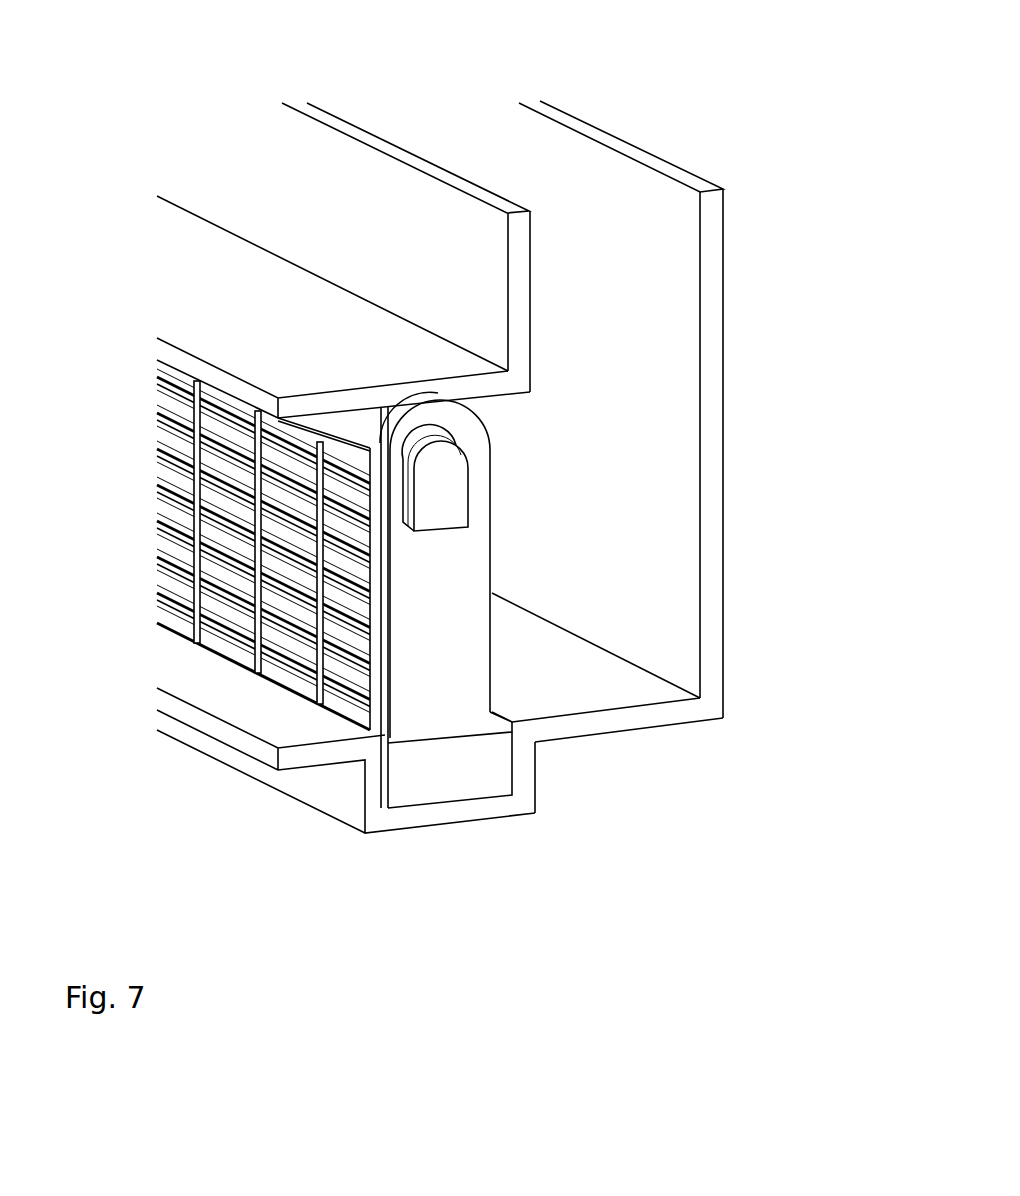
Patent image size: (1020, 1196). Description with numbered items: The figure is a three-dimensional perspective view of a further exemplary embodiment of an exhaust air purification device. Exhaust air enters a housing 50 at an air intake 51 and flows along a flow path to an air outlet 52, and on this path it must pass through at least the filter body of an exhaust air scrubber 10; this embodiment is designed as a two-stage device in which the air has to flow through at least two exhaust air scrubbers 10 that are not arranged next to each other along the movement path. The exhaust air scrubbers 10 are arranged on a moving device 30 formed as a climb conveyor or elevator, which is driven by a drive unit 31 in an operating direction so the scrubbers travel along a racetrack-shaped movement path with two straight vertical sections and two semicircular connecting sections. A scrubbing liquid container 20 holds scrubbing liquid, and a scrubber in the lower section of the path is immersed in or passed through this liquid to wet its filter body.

The exhaust air scrubber 10 is at (278, 527).
The scrubbing liquid container 20 is at (483, 772).
The moving device 30 is at (598, 565).
The drive unit 31 is at (442, 470).
The housing 50 is at (712, 373).
The air intake 51 is at (215, 588).
The air outlet 52 is at (558, 182).